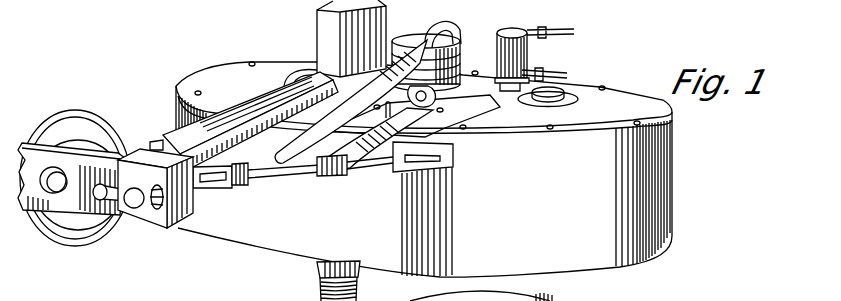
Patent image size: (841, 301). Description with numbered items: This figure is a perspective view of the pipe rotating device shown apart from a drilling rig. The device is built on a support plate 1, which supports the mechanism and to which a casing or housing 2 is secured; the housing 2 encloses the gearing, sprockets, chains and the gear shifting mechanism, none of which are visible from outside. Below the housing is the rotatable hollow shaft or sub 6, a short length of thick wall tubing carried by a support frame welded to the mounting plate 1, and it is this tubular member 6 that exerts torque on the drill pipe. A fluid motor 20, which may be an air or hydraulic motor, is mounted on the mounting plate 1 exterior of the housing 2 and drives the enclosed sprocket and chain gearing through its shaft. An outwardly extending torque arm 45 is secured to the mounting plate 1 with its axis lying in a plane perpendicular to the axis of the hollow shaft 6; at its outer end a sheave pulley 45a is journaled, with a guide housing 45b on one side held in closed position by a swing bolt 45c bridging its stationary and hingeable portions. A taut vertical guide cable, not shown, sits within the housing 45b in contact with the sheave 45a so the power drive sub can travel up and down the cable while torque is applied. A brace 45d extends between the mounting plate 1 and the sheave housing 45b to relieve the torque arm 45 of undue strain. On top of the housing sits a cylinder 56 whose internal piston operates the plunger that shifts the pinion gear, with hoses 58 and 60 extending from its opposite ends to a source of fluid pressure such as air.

The support plate 1 is at (612, 110).
The casing or housing 2 is at (669, 173).
The rotatable hollow shaft or sub 6 is at (315, 270).
The fluid motor 20 is at (466, 47).
The torque arm 45 is at (165, 136).
The sheave pulley 45a is at (60, 117).
The guide housing 45b is at (147, 220).
The swing bolt 45c is at (126, 222).
The brace 45d is at (296, 172).
The cylinder 56 is at (520, 53).
The hose 58 is at (532, 32).
The hose 60 is at (562, 74).